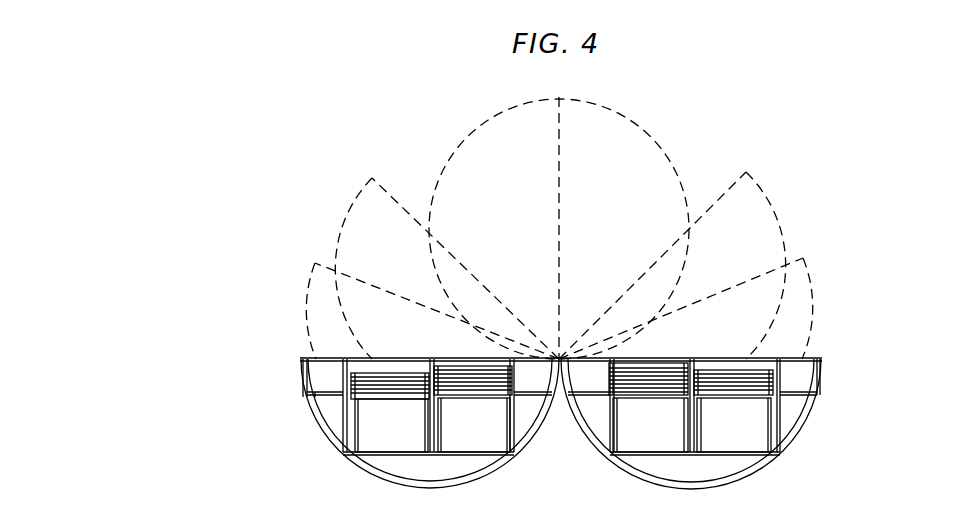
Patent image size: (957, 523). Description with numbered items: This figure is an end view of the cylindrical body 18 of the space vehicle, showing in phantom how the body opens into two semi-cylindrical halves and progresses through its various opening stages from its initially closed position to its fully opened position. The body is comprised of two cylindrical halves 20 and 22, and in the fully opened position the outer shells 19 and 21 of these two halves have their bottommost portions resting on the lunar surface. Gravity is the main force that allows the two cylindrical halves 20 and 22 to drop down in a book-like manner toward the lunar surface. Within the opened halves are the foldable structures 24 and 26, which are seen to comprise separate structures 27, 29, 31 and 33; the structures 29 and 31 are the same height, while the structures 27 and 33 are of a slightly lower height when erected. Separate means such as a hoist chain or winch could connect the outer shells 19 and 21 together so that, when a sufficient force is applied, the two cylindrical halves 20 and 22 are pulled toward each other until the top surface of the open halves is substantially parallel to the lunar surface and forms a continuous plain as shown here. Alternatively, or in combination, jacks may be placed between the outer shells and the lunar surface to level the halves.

The cylindrical body 18 is at (651, 141).
The outer shell 19 is at (725, 483).
The cylindrical half 20 is at (835, 381).
The outer shell 21 is at (385, 480).
The cylindrical half 22 is at (300, 393).
The foldable structure 24 is at (680, 456).
The foldable structure 26 is at (432, 456).
The separate structure 27 is at (752, 429).
The separate structure 29 is at (638, 428).
The separate structure 31 is at (470, 437).
The separate structure 33 is at (373, 433).